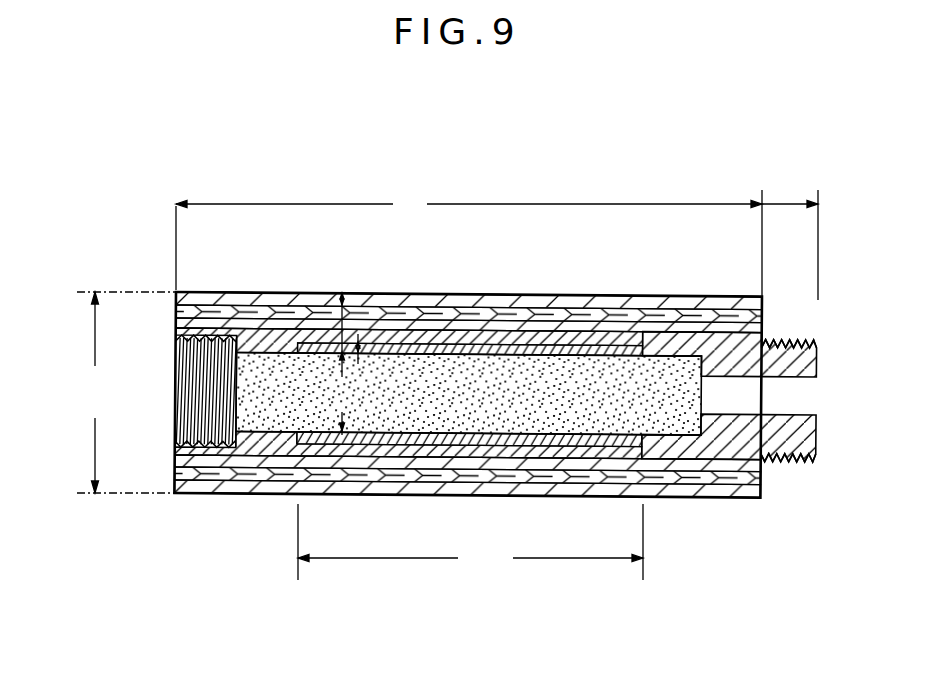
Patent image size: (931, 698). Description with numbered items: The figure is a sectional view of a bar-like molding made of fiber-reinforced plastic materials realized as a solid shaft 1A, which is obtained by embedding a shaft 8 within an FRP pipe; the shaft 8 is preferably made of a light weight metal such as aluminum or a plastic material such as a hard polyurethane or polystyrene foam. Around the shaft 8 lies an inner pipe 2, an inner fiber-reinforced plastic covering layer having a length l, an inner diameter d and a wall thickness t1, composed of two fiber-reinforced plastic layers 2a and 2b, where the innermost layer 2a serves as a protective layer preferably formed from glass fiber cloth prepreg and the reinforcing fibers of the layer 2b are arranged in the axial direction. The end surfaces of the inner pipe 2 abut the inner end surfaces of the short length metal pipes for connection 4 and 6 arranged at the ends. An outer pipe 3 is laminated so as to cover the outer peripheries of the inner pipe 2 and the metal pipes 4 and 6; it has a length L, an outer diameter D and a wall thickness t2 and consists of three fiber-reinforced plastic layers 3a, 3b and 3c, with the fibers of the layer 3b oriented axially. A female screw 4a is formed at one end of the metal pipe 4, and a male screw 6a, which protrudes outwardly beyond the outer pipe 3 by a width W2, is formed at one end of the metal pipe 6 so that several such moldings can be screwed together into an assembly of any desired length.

The solid shaft 1A is at (498, 204).
The inner pipe 2 is at (592, 398).
The fiber-reinforced plastic layer 2a is at (582, 358).
The fiber-reinforced plastic layer 2b is at (468, 402).
The outer pipe 3 is at (653, 252).
The fiber-reinforced plastic layer 3a is at (485, 323).
The fiber-reinforced plastic layer 3b is at (528, 316).
The fiber-reinforced plastic layer 3c is at (608, 301).
The short length metal pipe for connection 4 is at (273, 449).
The female screw 4a is at (202, 432).
The short length metal pipe for connection 6 is at (728, 448).
The male screw 6a is at (805, 458).
The shaft 8 is at (613, 432).
The length of the outer pipe L is at (469, 243).
The fitting width W2 is at (788, 204).
The outer diameter of the outer pipe D is at (126, 392).
The inner diameter of the inner pipe d is at (343, 363).
The wall thickness of the inner pipe t1 is at (371, 368).
The wall thickness of the outer pipe t2 is at (348, 298).
The length of the inner pipe l is at (470, 542).